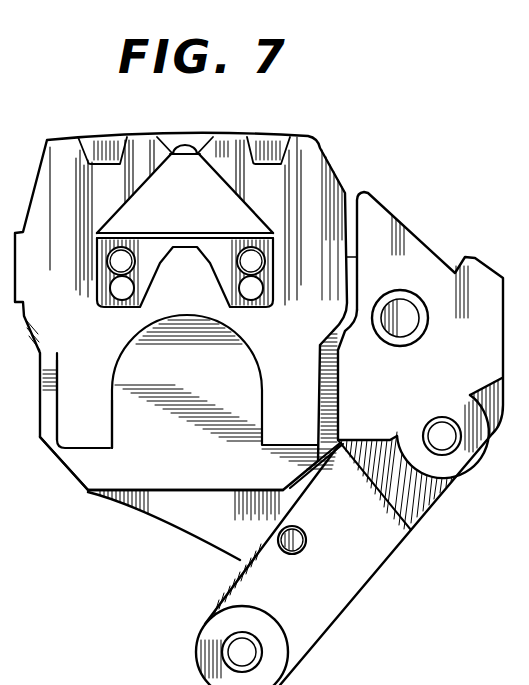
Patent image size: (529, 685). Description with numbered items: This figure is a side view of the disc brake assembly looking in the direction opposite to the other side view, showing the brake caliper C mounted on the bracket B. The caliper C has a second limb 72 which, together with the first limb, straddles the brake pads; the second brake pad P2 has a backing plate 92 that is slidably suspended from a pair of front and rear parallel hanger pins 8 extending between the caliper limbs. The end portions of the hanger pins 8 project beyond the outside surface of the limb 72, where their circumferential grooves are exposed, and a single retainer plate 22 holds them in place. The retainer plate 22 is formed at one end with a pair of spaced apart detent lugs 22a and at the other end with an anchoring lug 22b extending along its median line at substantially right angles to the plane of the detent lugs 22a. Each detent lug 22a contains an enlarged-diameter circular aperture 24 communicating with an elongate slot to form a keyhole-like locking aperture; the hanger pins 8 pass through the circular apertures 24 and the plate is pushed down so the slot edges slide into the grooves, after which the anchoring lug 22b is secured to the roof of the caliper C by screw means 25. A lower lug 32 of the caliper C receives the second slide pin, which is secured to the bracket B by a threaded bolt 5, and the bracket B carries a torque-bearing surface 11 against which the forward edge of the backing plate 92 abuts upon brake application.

The brake caliper C is at (310, 131).
The bracket B is at (388, 556).
The screw means 25 is at (185, 141).
The retainer plate 22 is at (243, 218).
The anchoring lug 22b is at (173, 155).
The detent lugs 22a is at (278, 318).
The hanger pins 8 is at (246, 263).
The circular aperture 24 is at (250, 316).
The second limb 72 is at (116, 398).
The torque-bearing surface 11 is at (330, 392).
The second brake pad P2 is at (84, 466).
The backing plate 92 is at (185, 479).
The lower lug 32 is at (213, 541).
The threaded bolt 5 is at (298, 547).